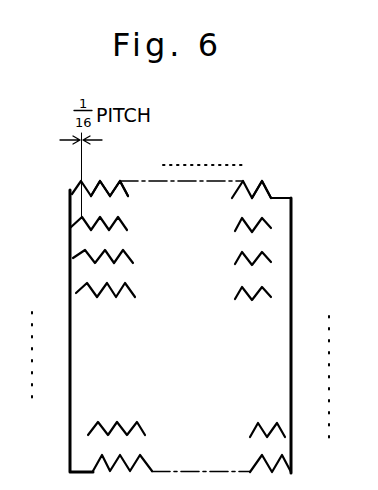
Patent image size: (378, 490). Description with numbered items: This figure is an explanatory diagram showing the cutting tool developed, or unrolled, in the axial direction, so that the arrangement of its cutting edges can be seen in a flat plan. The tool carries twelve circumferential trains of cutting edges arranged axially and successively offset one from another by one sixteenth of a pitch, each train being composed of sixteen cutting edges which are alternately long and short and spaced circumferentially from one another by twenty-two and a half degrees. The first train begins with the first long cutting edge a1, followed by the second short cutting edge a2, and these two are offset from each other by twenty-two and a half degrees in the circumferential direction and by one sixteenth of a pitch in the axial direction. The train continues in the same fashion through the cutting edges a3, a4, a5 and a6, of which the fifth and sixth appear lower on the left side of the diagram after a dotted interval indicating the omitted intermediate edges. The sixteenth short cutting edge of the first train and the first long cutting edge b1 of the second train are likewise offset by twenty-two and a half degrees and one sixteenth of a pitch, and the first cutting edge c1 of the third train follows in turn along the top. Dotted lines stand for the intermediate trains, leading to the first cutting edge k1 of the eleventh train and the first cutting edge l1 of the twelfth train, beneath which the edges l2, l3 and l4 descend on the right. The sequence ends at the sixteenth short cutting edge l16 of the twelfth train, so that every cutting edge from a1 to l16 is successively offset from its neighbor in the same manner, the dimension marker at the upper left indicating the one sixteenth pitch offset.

The first long cutting edge of the first train a1 is at (76, 184).
The second short cutting edge of the first train a2 is at (76, 223).
The third cutting edge of the first train a3 is at (76, 256).
The fourth cutting edge of the first train a4 is at (78, 292).
The fifth cutting edge of the first train a5 is at (92, 431).
The sixth cutting edge of the first train a6 is at (92, 466).
The first long cutting edge of the second train b1 is at (108, 161).
The first cutting edge of the third train c1 is at (124, 183).
The first cutting edge of the eleventh train k1 is at (244, 182).
The first cutting edge of the twelfth train l1 is at (273, 190).
The second cutting edge of the twelfth train l2 is at (271, 226).
The third cutting edge of the twelfth train l3 is at (271, 260).
The fourth cutting edge of the twelfth train l4 is at (271, 295).
The sixteenth short cutting edge of the twelfth train l16 is at (284, 465).